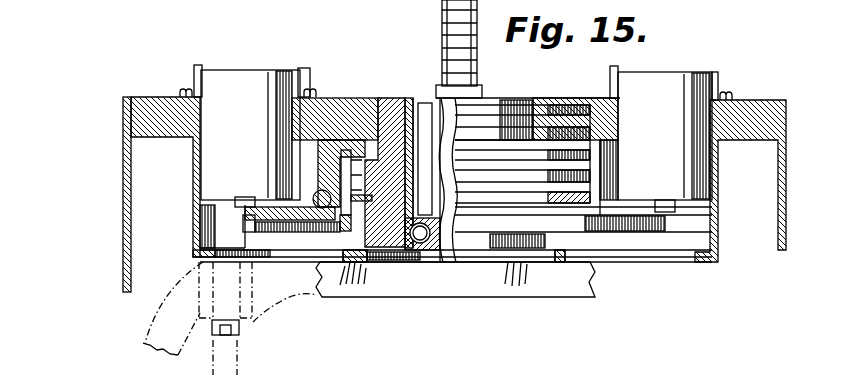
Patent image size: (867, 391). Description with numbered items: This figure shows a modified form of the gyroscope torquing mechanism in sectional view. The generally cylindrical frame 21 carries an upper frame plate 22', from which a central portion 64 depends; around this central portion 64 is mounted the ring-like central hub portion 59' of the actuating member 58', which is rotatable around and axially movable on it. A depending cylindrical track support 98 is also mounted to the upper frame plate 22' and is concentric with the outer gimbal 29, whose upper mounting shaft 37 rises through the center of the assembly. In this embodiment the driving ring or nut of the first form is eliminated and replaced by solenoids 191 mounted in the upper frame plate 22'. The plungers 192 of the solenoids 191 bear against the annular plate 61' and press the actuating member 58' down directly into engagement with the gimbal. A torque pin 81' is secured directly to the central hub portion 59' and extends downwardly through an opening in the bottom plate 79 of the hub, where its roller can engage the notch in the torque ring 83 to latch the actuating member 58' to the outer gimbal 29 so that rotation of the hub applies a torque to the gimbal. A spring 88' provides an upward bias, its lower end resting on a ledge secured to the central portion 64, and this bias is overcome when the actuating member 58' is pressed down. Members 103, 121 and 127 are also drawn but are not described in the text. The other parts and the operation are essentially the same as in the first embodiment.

The frame 21 is at (124, 200).
The upper frame plate 22' is at (750, 167).
The outer gimbal 29 is at (430, 287).
The upper mounting shaft 37 is at (445, 240).
The actuating member 58' is at (299, 152).
The central hub portion 59' is at (352, 106).
The annular plate 61' is at (291, 248).
The central portion 64 is at (393, 121).
The bottom plate 79 is at (333, 222).
The torque pin 81' is at (376, 257).
The torque ring 83 is at (550, 262).
The spring 88' is at (319, 191).
The track support 98 is at (193, 179).
The member 103 is at (424, 388).
The arm 121 is at (215, 326).
The rod 127 is at (225, 326).
The solenoid 191 is at (248, 78).
The plunger 192 is at (246, 202).